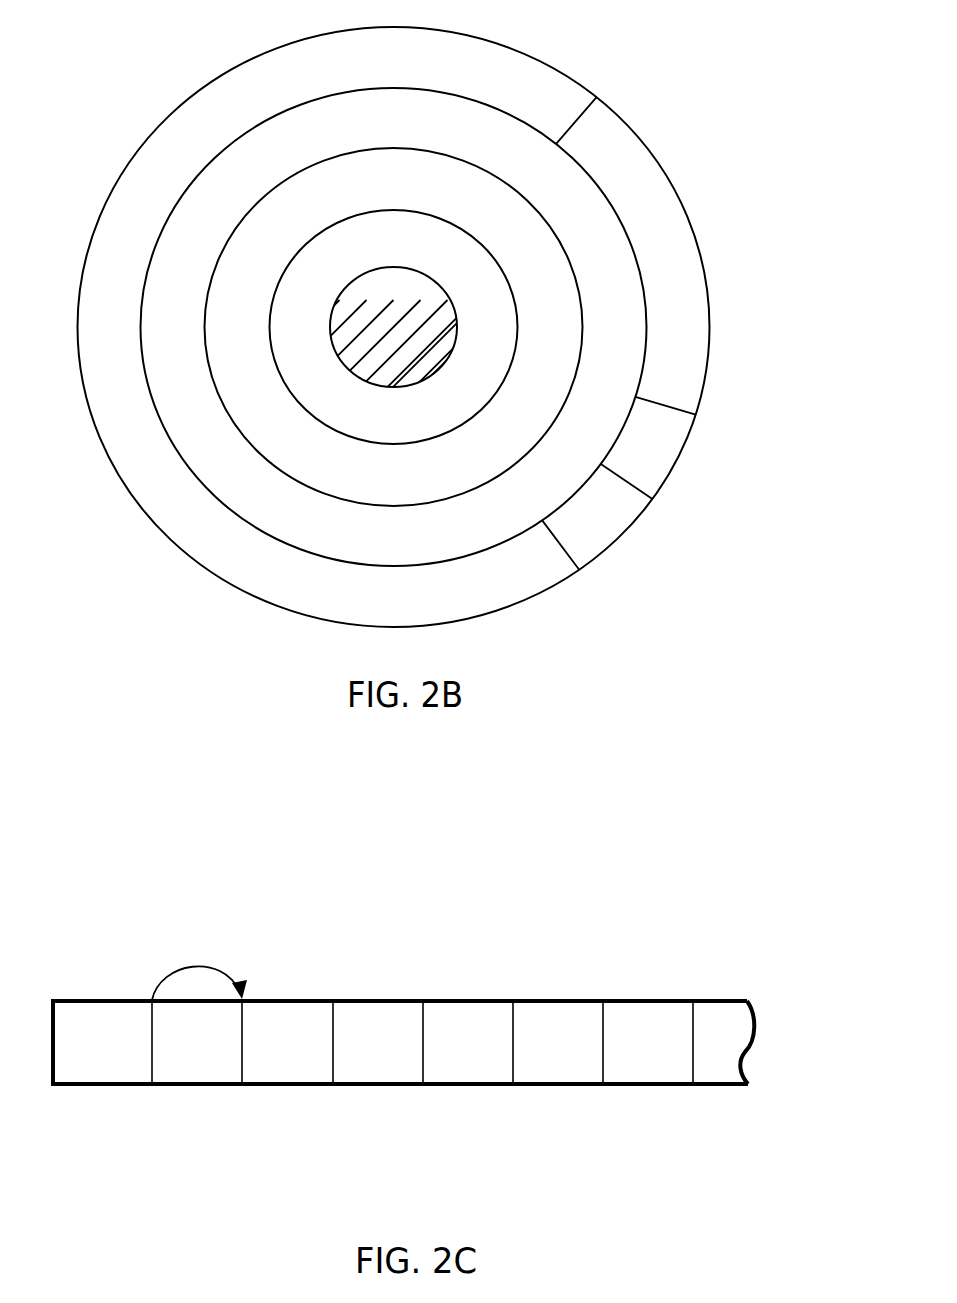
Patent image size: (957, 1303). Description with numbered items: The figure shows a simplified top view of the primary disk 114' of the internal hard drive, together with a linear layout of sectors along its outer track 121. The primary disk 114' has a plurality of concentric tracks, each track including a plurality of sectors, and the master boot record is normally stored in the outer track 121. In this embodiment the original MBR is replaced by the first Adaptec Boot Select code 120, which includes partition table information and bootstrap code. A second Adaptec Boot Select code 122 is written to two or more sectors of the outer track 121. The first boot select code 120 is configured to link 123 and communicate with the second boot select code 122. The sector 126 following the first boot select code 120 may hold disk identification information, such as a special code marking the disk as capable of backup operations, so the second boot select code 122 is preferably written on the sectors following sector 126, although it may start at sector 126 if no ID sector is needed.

In FIG. 2B, the primary disk 114' is at (460, 330).
In FIG. 2B, the outer track 121 is at (527, 593).
In FIG. 2B, the Adaptec Boot Select code (ABS-1) 120 is at (663, 517).
In FIG. 2C, the Adaptec Boot Select code (ABS-1) 120 is at (53, 1098).
In FIG. 2B, the second Adaptec Boot Select code (ABS-2) 122 is at (733, 418).
In FIG. 2C, the second Adaptec Boot Select code (ABS-2) 122 is at (693, 1098).
In FIG. 2C, the link 123 is at (197, 965).
In FIG. 2C, the sector 126 is at (232, 1078).